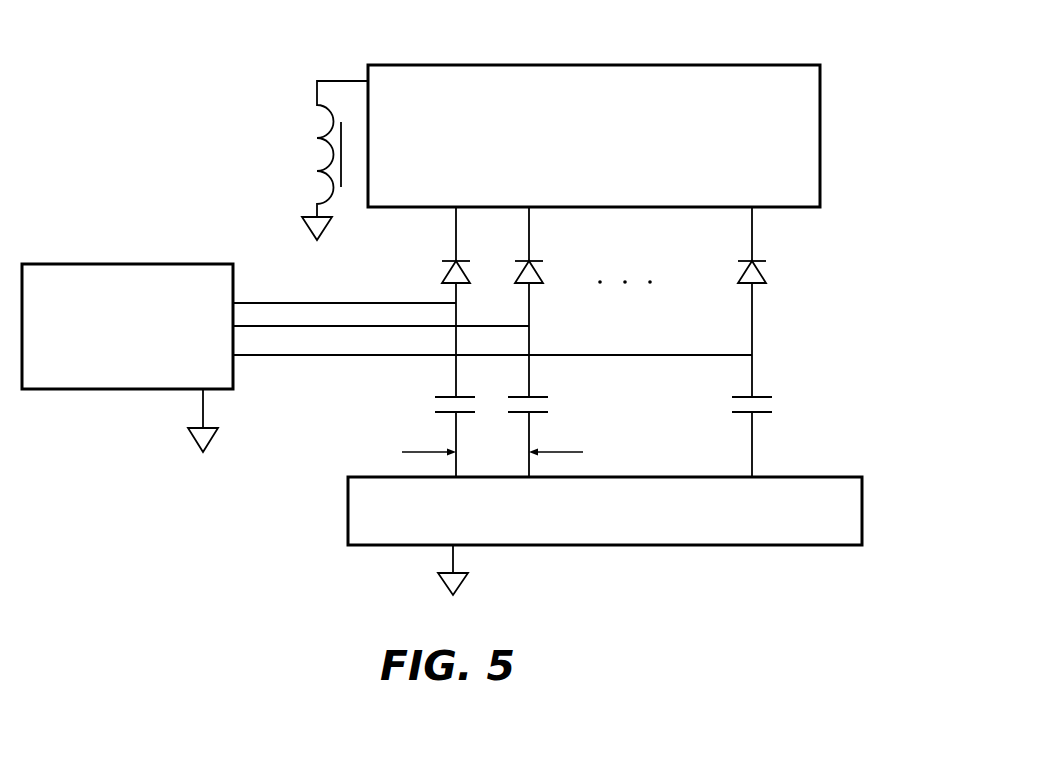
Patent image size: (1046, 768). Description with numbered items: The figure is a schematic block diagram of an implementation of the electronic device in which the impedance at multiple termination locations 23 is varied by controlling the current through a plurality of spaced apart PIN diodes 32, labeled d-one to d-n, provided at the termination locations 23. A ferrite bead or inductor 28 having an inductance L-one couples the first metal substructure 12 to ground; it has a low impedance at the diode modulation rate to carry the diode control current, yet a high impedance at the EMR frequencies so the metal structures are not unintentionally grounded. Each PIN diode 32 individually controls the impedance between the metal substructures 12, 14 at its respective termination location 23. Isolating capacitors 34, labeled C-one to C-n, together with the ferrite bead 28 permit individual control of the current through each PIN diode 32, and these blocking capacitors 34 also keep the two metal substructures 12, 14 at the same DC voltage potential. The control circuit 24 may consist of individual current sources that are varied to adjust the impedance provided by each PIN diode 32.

The first metal substructure 12 is at (820, 105).
The second metal substructure 14 is at (862, 512).
The termination locations 23 is at (815, 253).
The control circuit 24 is at (52, 264).
The ferrite bead or inductor 28 is at (330, 123).
The PIN diodes 32 is at (770, 276).
The isolating capacitors 34 is at (783, 402).